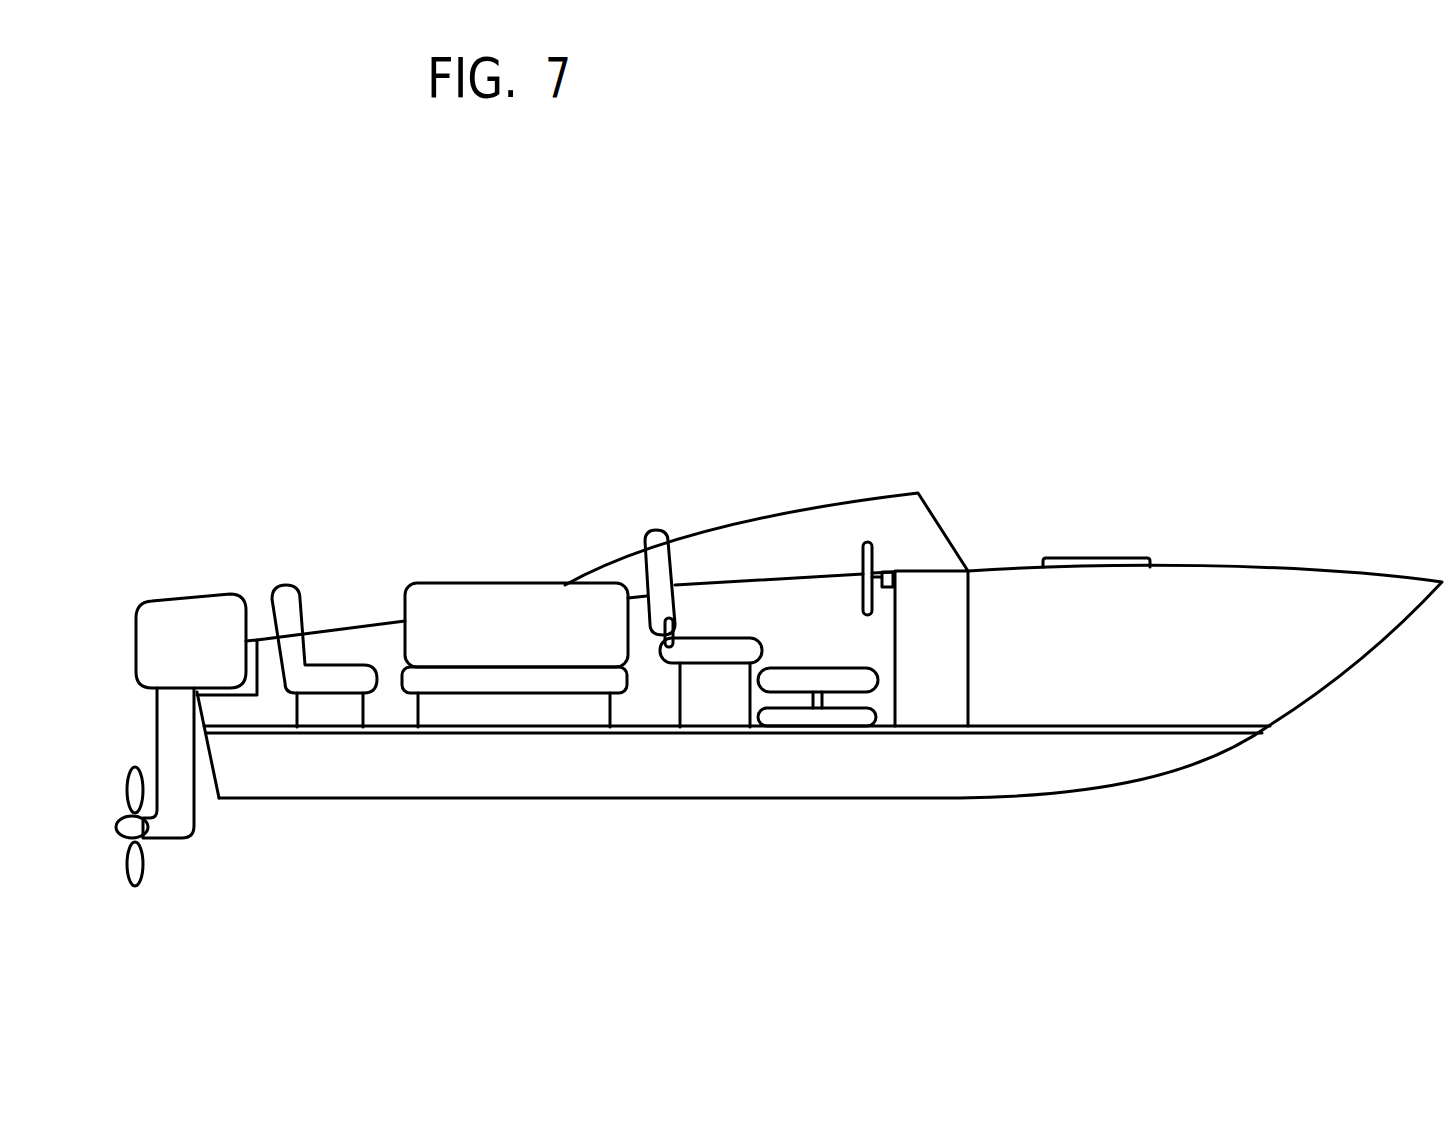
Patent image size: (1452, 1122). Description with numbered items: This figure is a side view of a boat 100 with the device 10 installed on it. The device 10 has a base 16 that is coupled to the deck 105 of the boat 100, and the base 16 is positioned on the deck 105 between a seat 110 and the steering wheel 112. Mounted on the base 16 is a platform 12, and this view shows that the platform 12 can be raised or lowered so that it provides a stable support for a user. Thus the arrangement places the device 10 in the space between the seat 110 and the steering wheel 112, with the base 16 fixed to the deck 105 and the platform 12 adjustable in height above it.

The boat 100 is at (303, 532).
The deck 105 is at (752, 728).
The seat 110 is at (705, 637).
The steering wheel 112 is at (863, 542).
The device 10 is at (886, 642).
The platform 12 is at (858, 683).
The base 16 is at (828, 724).